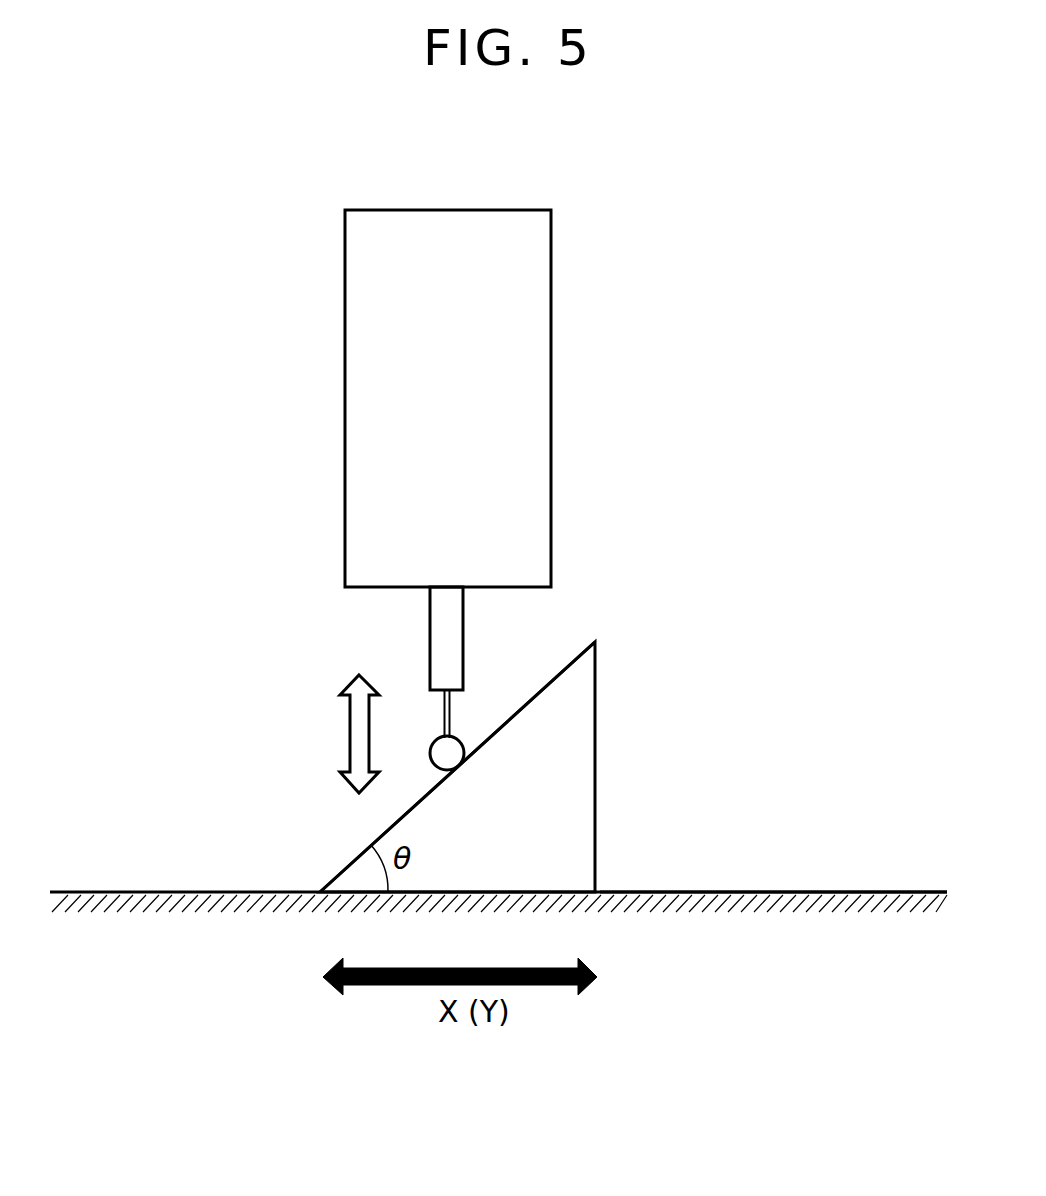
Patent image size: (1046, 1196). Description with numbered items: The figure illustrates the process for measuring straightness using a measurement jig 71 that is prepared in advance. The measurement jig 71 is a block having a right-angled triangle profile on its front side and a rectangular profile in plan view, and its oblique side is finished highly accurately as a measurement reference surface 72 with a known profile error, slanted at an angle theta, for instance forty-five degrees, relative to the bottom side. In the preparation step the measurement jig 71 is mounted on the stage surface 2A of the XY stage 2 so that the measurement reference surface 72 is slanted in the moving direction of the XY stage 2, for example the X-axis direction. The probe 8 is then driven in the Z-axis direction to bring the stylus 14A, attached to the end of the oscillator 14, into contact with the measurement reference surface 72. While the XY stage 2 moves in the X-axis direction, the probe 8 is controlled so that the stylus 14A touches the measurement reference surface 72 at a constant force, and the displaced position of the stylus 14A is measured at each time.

The probe 8 is at (551, 383).
The oscillator 14 is at (430, 627).
The stylus 14A is at (455, 738).
The measurement jig 71 is at (588, 770).
The measurement reference surface 72 is at (353, 860).
The XY stage 2 is at (785, 903).
The stage surface 2A is at (837, 892).